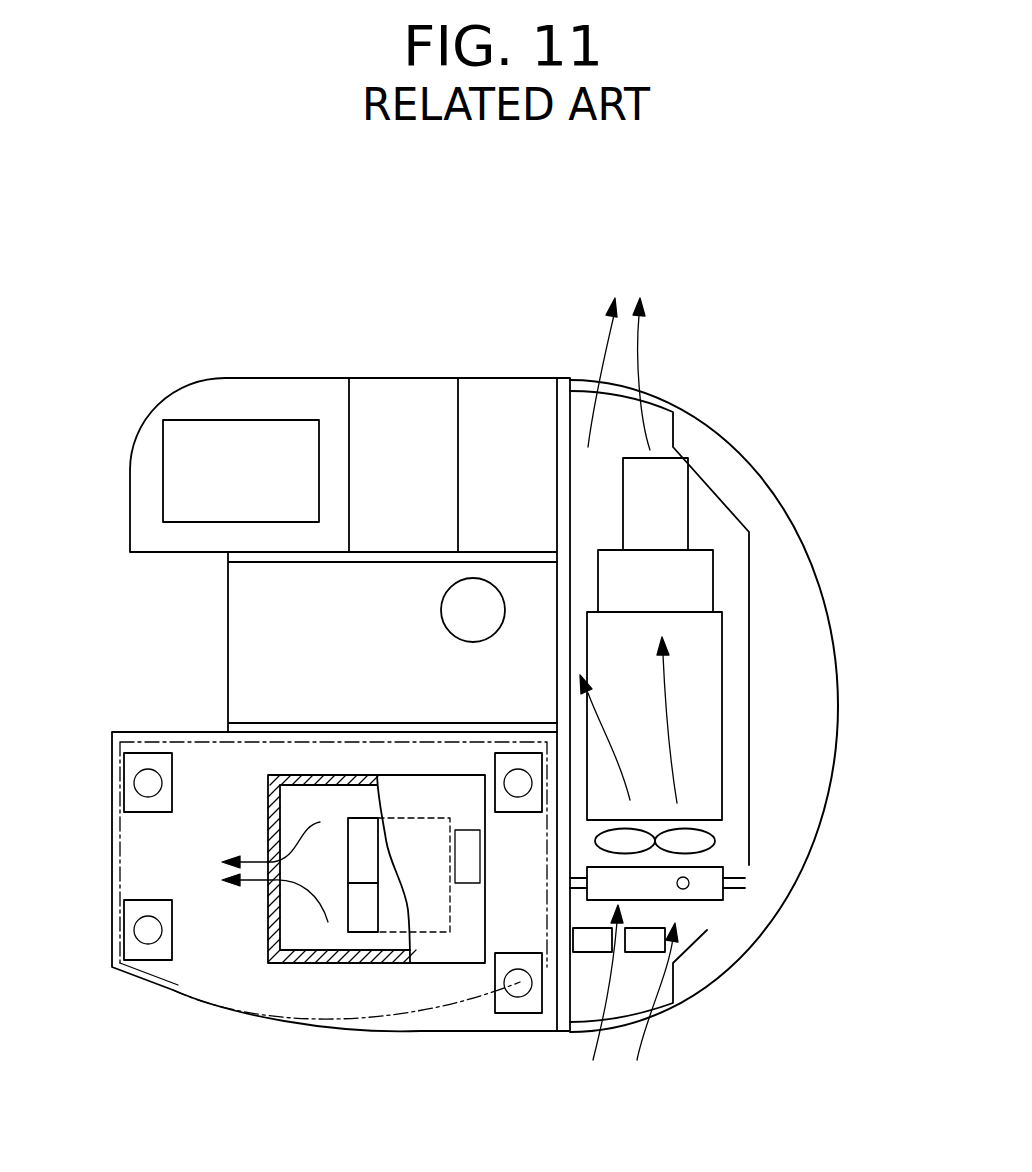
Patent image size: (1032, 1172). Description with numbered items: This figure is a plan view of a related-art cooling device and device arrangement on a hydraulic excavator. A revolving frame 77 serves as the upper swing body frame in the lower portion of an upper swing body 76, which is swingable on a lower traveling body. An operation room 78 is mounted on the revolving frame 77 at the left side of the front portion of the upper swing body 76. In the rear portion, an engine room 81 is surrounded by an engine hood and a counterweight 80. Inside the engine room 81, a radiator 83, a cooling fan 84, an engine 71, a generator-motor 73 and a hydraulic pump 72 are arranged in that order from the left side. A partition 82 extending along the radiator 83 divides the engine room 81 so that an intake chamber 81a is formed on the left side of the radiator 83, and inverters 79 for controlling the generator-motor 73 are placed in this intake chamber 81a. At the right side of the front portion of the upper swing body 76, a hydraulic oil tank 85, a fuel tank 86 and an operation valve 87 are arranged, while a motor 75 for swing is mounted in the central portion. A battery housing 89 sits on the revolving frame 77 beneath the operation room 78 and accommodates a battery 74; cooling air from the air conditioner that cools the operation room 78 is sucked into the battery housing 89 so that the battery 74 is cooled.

The engine 71 is at (710, 745).
The hydraulic pump 72 is at (669, 513).
The generator-motor 73 is at (669, 597).
The battery 74 is at (395, 897).
The motor for swing 75 is at (470, 617).
The upper swing body 76 is at (790, 408).
The revolving frame 77 is at (260, 667).
The operation room 78 is at (173, 992).
The inverters 79 is at (647, 942).
The counterweight 80 is at (803, 655).
The engine room 81 is at (746, 606).
The intake chamber 81a is at (725, 911).
The partition 82 is at (737, 873).
The radiator 83 is at (653, 888).
The cooling fan 84 is at (708, 843).
The hydraulic oil tank 85 is at (529, 475).
The fuel tank 86 is at (421, 475).
The operation valve 87 is at (254, 480).
The battery housing 89 is at (305, 948).